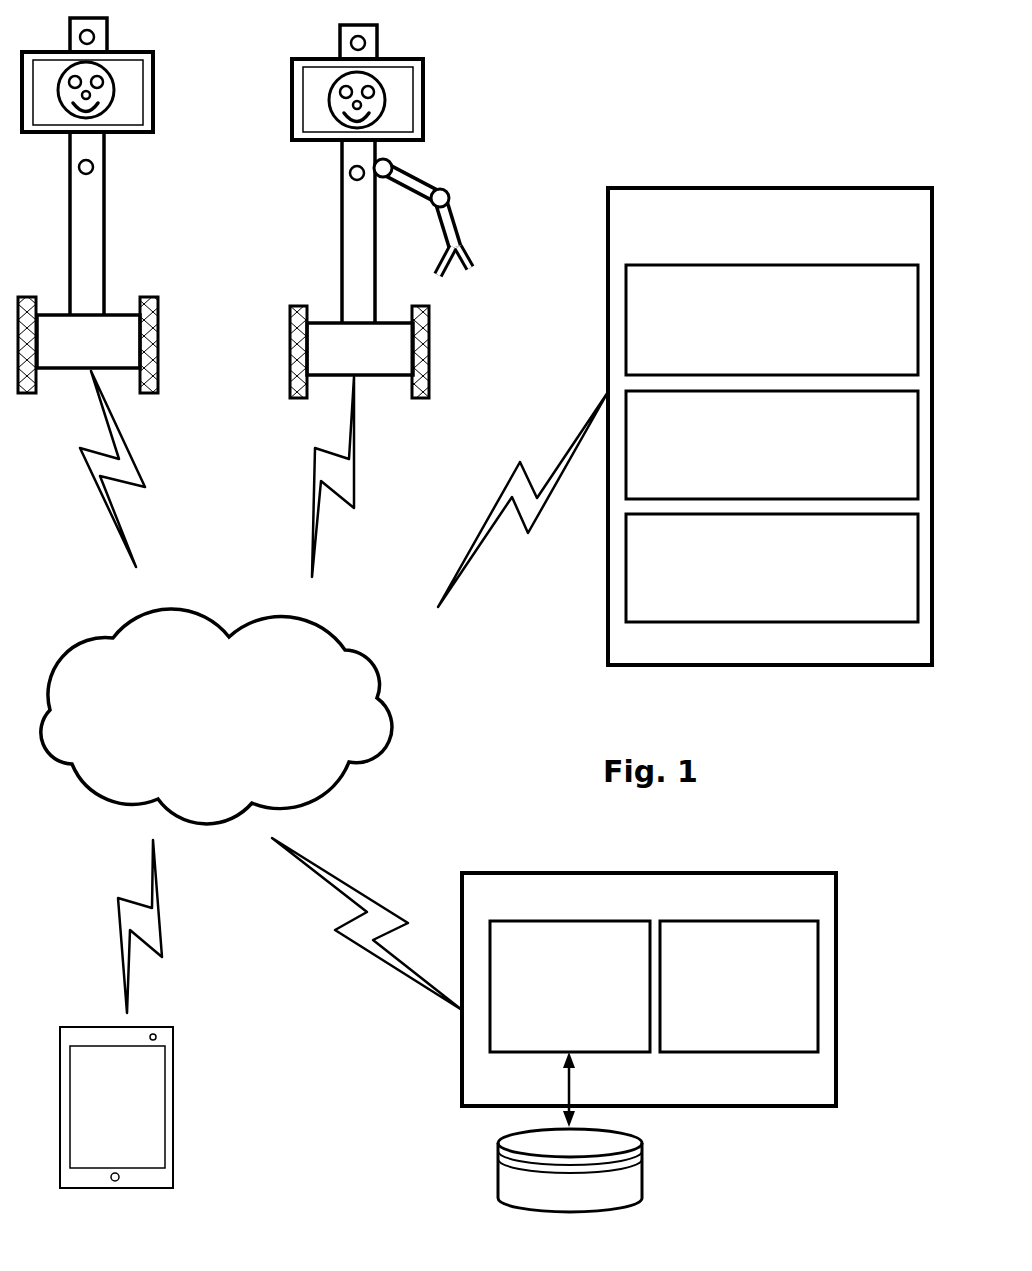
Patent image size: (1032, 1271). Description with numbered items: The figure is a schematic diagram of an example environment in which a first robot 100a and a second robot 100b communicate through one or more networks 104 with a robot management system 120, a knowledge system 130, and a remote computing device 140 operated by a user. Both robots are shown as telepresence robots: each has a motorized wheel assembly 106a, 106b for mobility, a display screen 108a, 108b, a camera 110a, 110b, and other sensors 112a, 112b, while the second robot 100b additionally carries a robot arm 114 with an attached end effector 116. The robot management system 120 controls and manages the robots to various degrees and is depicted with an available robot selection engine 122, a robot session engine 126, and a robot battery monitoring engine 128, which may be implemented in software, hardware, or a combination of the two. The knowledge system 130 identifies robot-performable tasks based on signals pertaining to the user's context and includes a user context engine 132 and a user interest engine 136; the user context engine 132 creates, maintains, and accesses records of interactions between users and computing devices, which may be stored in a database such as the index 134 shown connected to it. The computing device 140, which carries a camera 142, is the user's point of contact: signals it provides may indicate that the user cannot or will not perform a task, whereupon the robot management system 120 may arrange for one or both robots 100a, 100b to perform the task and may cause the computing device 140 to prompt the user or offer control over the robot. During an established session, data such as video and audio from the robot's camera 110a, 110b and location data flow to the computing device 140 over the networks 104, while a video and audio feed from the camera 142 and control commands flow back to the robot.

The first robot 100a is at (232, 79).
The second robot 100b is at (524, 87).
The network 104 is at (216, 716).
The motorized wheel assembly 106a is at (62, 313).
The motorized wheel assembly 106b is at (332, 322).
The display screen 108a is at (152, 56).
The display screen 108b is at (423, 61).
The camera 110a is at (102, 37).
The camera 110b is at (372, 43).
The other sensor 112a is at (103, 165).
The other sensor 112b is at (343, 172).
The robot arm 114 is at (472, 196).
The end effector 116 is at (470, 252).
The robot management system 120 is at (770, 426).
The available robot selection engine 122 is at (772, 320).
The robot session engine 126 is at (772, 445).
The robot battery monitoring engine 128 is at (772, 568).
The knowledge system 130 is at (649, 989).
The user context engine 132 is at (570, 986).
The index 134 is at (570, 1170).
The user interest engine 136 is at (739, 986).
The remote computing device 140 is at (173, 1098).
The camera 142 is at (156, 1034).